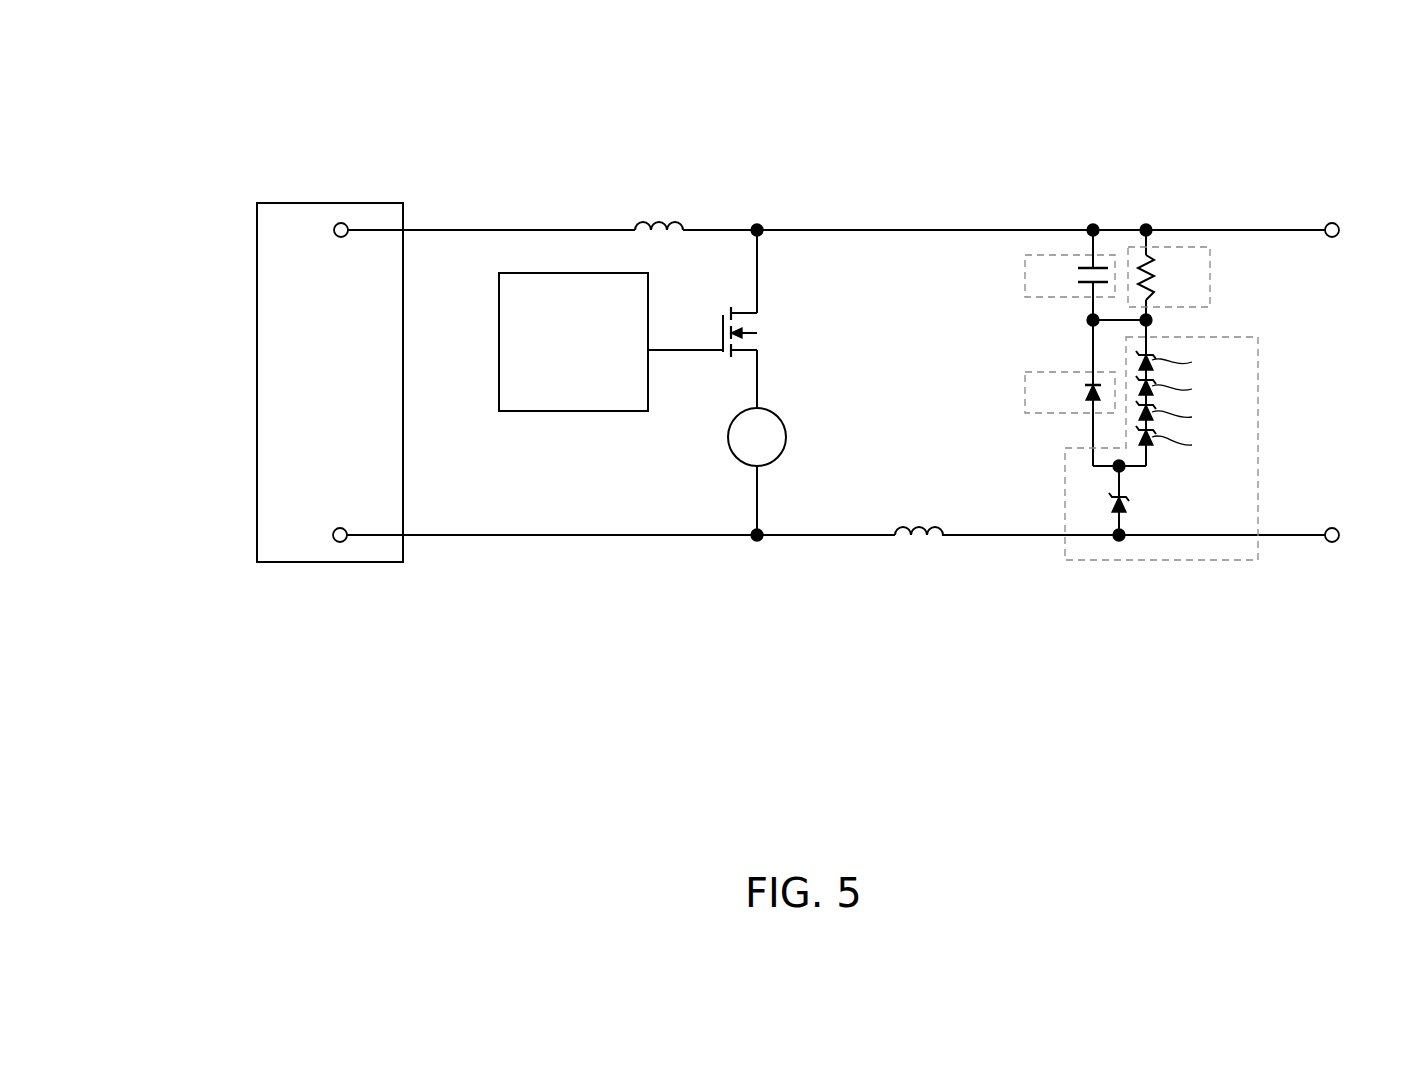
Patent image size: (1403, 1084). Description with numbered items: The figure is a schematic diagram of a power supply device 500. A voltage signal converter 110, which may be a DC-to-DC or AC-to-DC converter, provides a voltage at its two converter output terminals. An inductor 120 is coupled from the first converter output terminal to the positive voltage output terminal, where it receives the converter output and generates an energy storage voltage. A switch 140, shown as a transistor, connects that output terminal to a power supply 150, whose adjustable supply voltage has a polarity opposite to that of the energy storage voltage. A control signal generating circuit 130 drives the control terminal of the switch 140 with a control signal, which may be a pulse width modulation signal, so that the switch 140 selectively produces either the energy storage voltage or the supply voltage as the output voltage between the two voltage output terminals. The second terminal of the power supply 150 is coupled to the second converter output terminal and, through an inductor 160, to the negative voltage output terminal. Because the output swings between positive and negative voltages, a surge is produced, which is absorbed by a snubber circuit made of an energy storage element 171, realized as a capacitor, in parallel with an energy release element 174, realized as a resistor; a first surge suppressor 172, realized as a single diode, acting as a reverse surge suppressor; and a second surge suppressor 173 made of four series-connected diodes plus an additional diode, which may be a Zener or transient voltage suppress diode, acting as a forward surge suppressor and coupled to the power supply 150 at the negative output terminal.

The power supply device 500 is at (170, 117).
The voltage signal converter 110 is at (257, 318).
The inductor 120 is at (663, 221).
The control signal generating circuit 130 is at (499, 350).
The switch 140 is at (759, 329).
The power supply 150 is at (728, 437).
The inductor 160 is at (920, 544).
The energy storage element 171 is at (1025, 275).
The first surge suppressor 172 is at (1025, 392).
The second surge suppressor 173 is at (1258, 443).
The energy release element 174 is at (1210, 266).